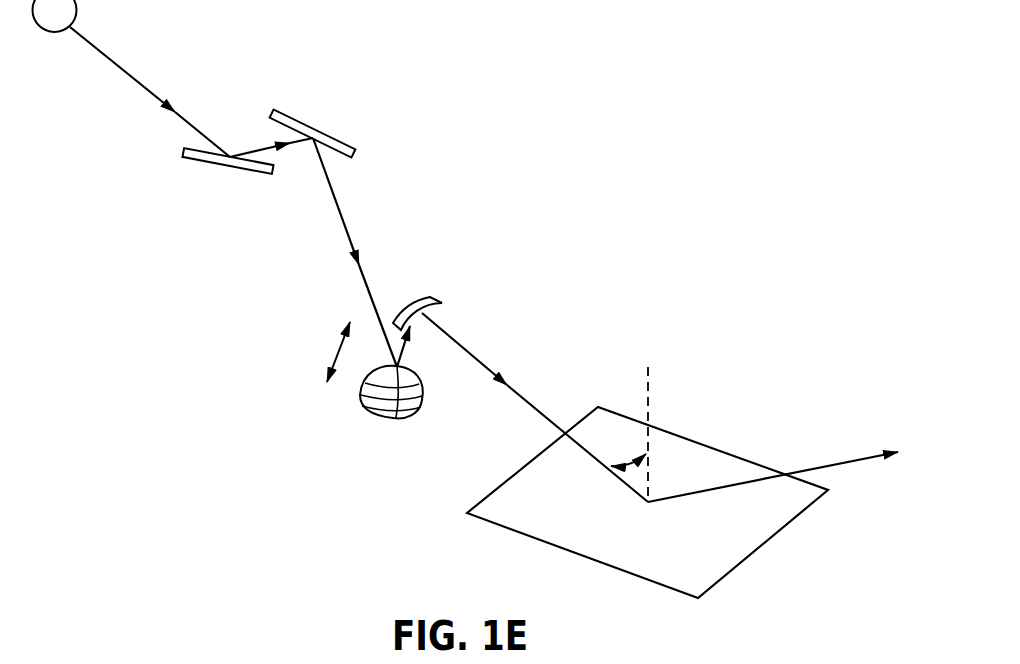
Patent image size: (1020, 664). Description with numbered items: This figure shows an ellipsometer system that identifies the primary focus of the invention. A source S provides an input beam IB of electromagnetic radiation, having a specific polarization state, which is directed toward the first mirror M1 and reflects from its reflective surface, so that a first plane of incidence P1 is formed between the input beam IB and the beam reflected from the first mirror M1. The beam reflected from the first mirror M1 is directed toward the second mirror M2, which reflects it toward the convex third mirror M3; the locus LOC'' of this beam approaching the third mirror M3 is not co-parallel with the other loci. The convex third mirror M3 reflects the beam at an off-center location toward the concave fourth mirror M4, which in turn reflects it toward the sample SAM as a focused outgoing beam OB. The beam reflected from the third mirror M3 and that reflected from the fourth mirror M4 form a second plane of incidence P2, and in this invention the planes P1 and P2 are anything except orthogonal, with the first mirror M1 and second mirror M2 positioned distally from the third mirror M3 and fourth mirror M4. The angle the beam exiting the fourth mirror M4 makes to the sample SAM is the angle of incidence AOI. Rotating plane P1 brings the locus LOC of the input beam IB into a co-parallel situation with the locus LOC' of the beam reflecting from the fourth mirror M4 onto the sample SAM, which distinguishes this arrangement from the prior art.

The source S is at (45, 23).
The locus of the input beam LOC is at (189, 69).
The input beam IB is at (150, 92).
The first mirror M1 is at (208, 168).
The first plane of incidence P1 is at (271, 160).
The second mirror M2 is at (326, 125).
The locus of the beam approaching the third mirror LOC'' is at (294, 252).
The concave fourth mirror M4 is at (418, 293).
The second plane of incidence P2 is at (371, 352).
The convex third mirror M3 is at (375, 422).
The locus of the beam reflecting onto the sample LOC' is at (535, 400).
The angle of incidence AOI is at (615, 434).
The outgoing beam OB is at (773, 459).
The sample SAM is at (707, 553).